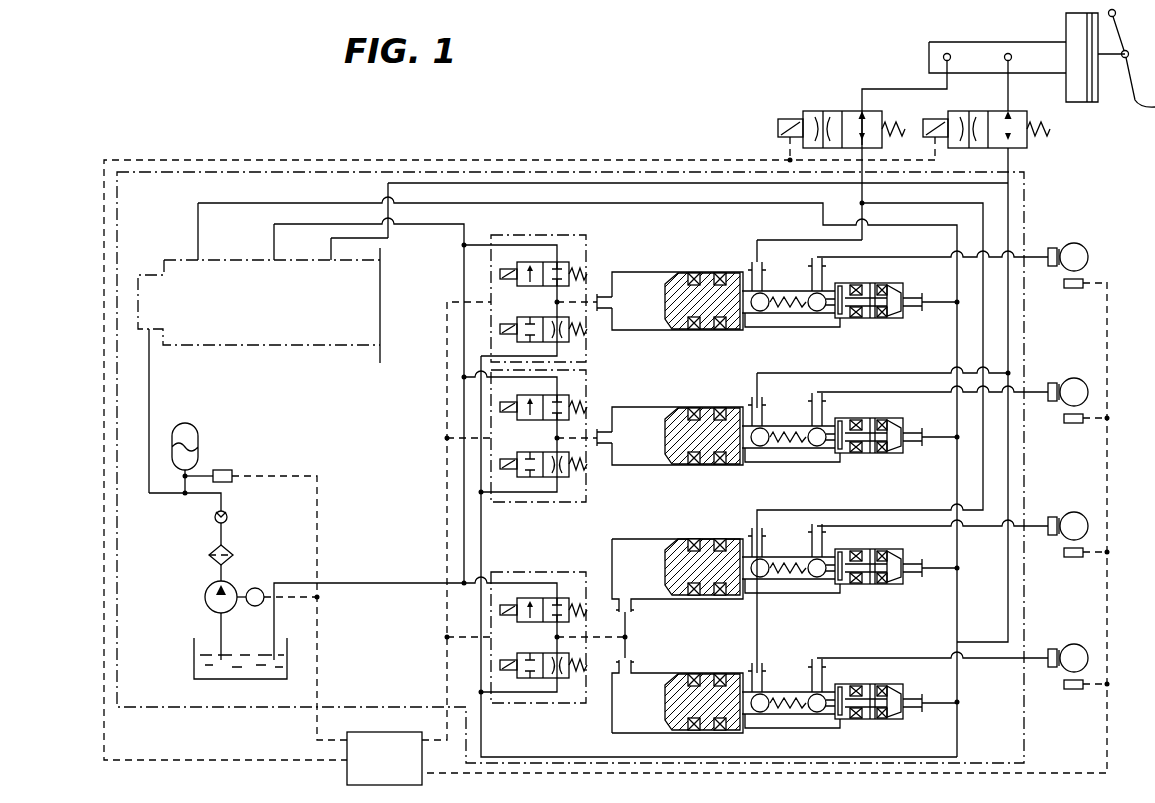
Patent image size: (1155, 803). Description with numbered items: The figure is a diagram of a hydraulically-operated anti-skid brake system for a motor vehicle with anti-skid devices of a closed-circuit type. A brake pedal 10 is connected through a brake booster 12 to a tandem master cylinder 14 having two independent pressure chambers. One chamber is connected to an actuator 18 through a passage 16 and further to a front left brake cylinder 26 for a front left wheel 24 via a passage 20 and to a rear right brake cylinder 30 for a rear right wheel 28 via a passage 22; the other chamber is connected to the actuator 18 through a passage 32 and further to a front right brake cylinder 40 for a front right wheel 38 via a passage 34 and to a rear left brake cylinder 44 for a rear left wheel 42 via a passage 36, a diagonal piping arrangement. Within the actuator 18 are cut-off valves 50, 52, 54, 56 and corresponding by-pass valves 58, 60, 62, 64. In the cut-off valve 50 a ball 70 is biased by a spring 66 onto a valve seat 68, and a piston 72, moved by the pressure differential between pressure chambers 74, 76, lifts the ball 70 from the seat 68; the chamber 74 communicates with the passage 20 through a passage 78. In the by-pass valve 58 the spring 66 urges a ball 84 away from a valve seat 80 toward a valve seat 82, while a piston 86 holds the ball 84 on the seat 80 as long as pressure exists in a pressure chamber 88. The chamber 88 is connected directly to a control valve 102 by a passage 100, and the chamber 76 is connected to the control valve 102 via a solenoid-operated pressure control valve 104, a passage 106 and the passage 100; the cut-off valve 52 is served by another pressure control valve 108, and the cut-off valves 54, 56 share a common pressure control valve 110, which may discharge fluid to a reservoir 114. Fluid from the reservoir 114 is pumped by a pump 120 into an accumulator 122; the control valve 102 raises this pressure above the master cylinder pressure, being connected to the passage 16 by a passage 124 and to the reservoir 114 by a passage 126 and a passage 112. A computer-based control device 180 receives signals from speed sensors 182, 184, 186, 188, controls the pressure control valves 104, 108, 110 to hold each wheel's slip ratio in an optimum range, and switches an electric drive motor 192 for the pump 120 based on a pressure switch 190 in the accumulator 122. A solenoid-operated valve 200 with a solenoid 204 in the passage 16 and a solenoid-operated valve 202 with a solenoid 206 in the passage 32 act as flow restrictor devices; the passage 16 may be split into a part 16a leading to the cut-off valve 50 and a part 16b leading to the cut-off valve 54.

The brake pedal 10 is at (1138, 100).
The brake booster 12 is at (1080, 96).
The master cylinder 14 is at (972, 42).
The passage 16 is at (866, 89).
The part of passage 16 16a is at (782, 240).
The part of passage 16 16b is at (947, 203).
The actuator 18 is at (1026, 202).
The passage 20 is at (1034, 256).
The passage 22 is at (1035, 524).
The front left wheel 24 is at (1075, 270).
The front left brake cylinder 26 is at (1052, 269).
The rear right wheel 28 is at (1059, 524).
The rear right brake cylinder 30 is at (1052, 538).
The passage 32 is at (1010, 100).
The passage 34 is at (1035, 391).
The passage 36 is at (1035, 656).
The front right wheel 38 is at (1060, 392).
The front right brake cylinder 40 is at (1052, 404).
The rear left wheel 42 is at (1059, 659).
The rear left brake cylinder 44 is at (1052, 670).
The cut-off valve 50 is at (778, 295).
The cut-off valve 52 is at (777, 433).
The cut-off valve 54 is at (784, 562).
The cut-off valve 56 is at (784, 691).
The by-pass valve 58 is at (894, 308).
The by-pass valve 60 is at (850, 470).
The by-pass valve 62 is at (855, 600).
The by-pass valve 64 is at (856, 733).
The spring 66 is at (790, 310).
The valve seat 68 is at (754, 322).
The ball 70 is at (761, 311).
The piston 72 is at (693, 300).
The pressure chamber 74 is at (741, 330).
The pressure chamber 76 is at (633, 327).
The passage 78 is at (826, 328).
The valve seat 80 is at (808, 294).
The valve seat 82 is at (832, 282).
The ball 84 is at (814, 292).
The piston 86 is at (874, 302).
The pressure chamber 88 is at (896, 320).
The passage 100 is at (648, 204).
The control valve 102 is at (289, 352).
The solenoid-operated pressure control valve 104 is at (588, 243).
The passage 106 is at (533, 757).
The solenoid-operated pressure control valve 108 is at (590, 381).
The solenoid-operated pressure control valve 110 is at (540, 572).
The passage 112 is at (385, 582).
The reservoir 114 is at (194, 665).
The pump 120 is at (204, 596).
The accumulator 122 is at (196, 434).
The passage 124 is at (386, 183).
The passage 126 is at (431, 226).
The control device 180 is at (347, 775).
The speed sensor 182 is at (1073, 288).
The speed sensor 184 is at (1073, 557).
The speed sensor 186 is at (1074, 423).
The speed sensor 188 is at (1073, 689).
The pressure switch 190 is at (231, 470).
The electric drive motor 192 is at (256, 588).
The solenoid-operated valve 200 is at (835, 111).
The solenoid-operated valve 202 is at (1028, 148).
The solenoid 204 is at (788, 118).
The solenoid 206 is at (940, 118).